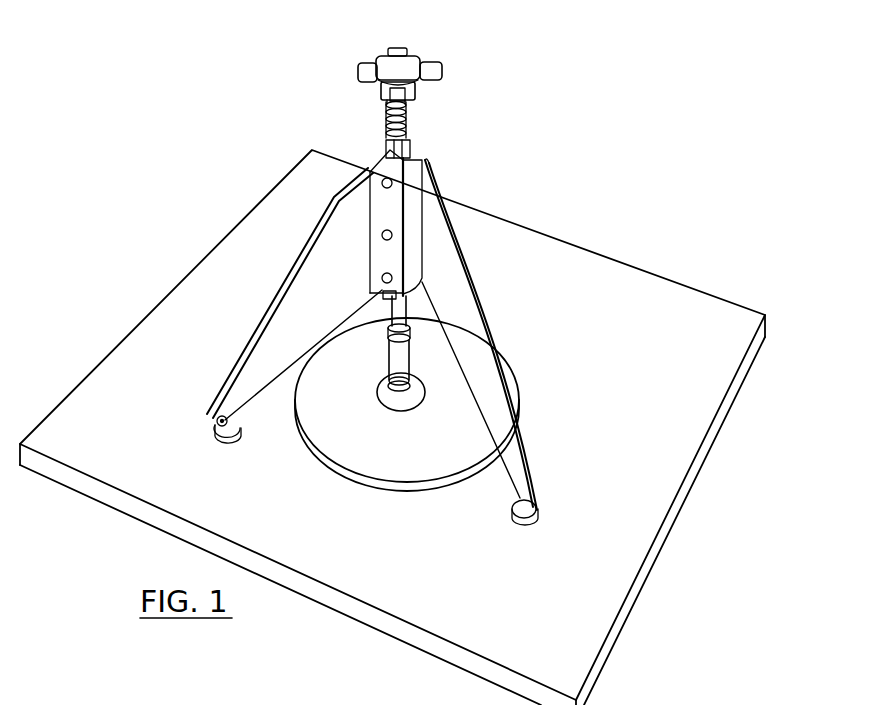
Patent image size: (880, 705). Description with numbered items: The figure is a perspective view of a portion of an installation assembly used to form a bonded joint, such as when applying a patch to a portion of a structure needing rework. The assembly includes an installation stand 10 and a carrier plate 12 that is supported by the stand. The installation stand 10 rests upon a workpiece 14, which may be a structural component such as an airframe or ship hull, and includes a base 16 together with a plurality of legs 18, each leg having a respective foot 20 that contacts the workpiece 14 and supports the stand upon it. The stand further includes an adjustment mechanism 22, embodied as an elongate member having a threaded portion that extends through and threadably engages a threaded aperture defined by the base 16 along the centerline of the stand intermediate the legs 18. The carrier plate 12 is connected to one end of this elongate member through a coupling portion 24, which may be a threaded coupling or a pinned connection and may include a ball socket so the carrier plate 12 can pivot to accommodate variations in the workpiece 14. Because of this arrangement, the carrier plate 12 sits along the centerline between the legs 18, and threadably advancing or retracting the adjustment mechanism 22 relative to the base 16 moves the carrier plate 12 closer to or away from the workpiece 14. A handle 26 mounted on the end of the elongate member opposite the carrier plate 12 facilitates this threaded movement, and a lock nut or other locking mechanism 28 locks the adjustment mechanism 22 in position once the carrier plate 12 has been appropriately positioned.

The installation stand 10 is at (488, 267).
The carrier plate 12 is at (392, 456).
The workpiece 14 is at (612, 290).
The base 16 is at (405, 202).
The legs 18 is at (297, 328).
The foot 20 is at (222, 438).
The adjustment mechanism 22 is at (403, 303).
The coupling portion 24 is at (392, 390).
The handle 26 is at (408, 66).
The locking mechanism 28 is at (412, 135).